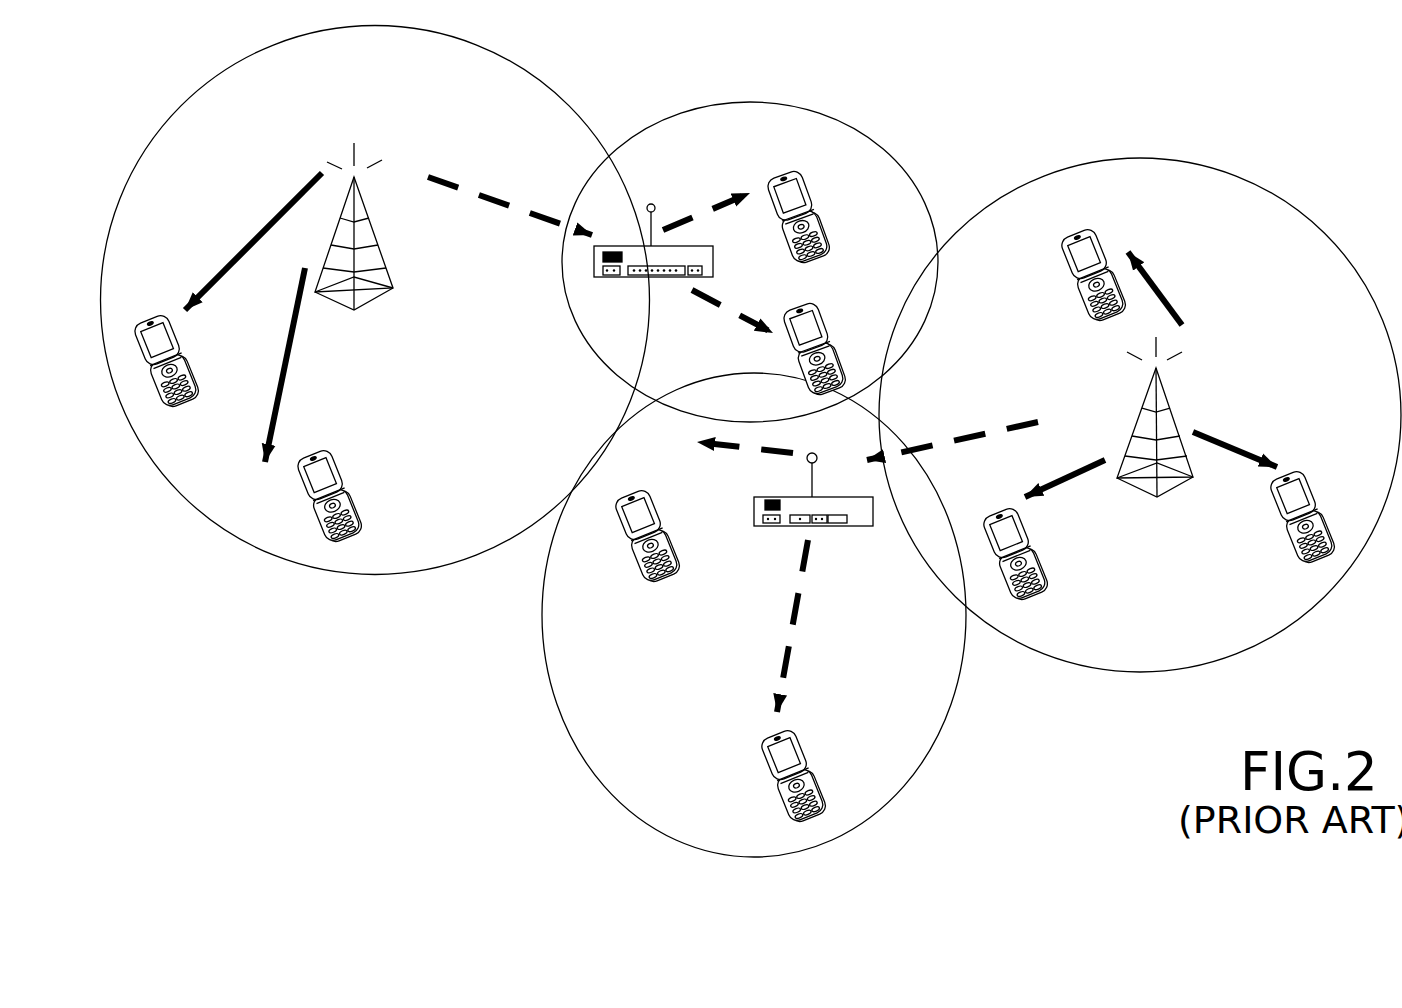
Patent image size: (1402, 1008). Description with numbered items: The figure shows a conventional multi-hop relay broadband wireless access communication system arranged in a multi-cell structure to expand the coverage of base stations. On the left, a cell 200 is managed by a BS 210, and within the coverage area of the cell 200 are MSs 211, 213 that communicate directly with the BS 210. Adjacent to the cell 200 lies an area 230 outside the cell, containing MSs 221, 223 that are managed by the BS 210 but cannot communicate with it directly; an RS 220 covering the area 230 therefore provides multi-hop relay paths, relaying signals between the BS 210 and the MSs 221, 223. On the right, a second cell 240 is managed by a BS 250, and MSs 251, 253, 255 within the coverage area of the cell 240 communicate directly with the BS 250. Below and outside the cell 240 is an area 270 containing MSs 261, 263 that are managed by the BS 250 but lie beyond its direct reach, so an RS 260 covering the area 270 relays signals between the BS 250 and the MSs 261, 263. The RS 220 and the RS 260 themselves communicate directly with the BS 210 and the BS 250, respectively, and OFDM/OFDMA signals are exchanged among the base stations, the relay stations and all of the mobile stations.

The cell 200 is at (375, 300).
The BS 210 is at (373, 232).
The MS 211 is at (147, 315).
The MS 213 is at (323, 455).
The RS 220 is at (623, 277).
The MS 221 is at (810, 307).
The MS 223 is at (810, 162).
The area 230 is at (750, 262).
The cell 240 is at (1140, 415).
The BS 250 is at (1177, 418).
The MS 251 is at (1078, 228).
The MS 253 is at (1287, 472).
The MS 255 is at (1000, 505).
The RS 260 is at (767, 527).
The MS 261 is at (645, 495).
The MS 263 is at (790, 733).
The area 270 is at (754, 615).